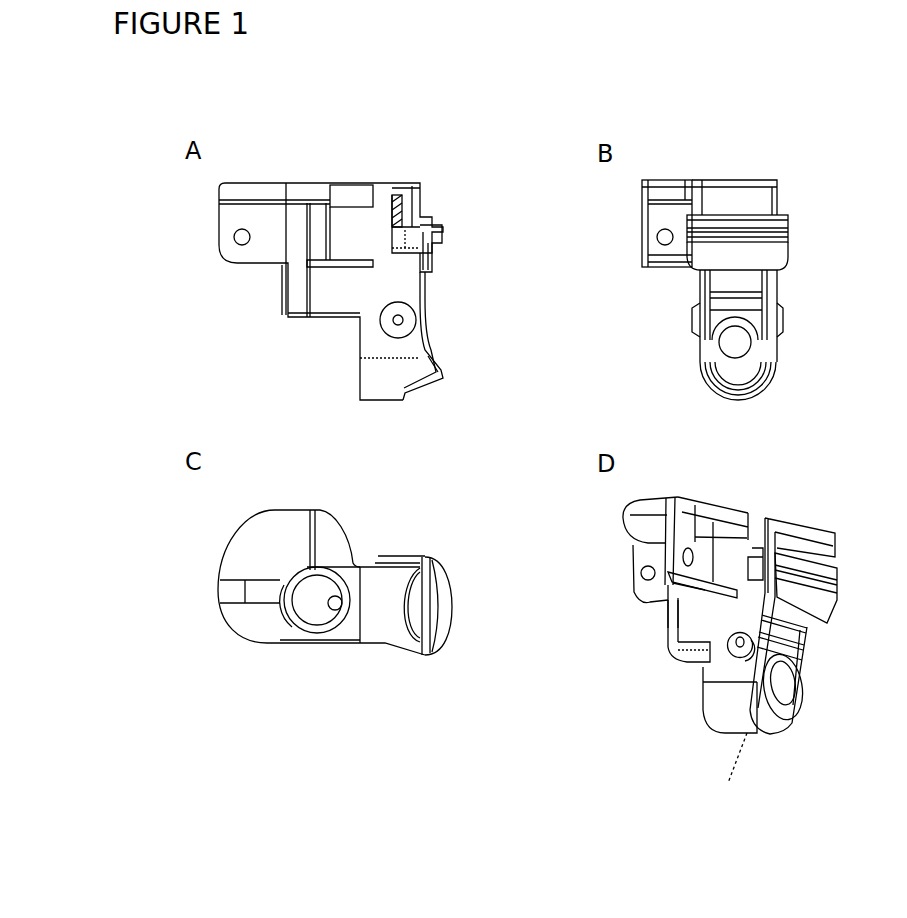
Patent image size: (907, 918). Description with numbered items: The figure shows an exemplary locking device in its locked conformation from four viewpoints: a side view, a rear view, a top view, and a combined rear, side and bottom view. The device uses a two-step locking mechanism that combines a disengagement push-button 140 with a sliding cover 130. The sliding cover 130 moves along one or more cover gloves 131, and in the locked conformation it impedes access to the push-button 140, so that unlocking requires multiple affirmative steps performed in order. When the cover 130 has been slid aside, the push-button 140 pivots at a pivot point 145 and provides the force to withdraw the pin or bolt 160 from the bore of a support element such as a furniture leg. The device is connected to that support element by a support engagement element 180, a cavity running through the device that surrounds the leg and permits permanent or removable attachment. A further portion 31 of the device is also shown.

The bracket block 31 is at (770, 532).
The sliding cover 130 is at (428, 245).
The cover glove 131 is at (398, 208).
The disengagement push-button 140 is at (432, 359).
The pivot point 145 is at (412, 320).
The pin or bolt 160 is at (333, 612).
The support engagement element 180 is at (318, 592).